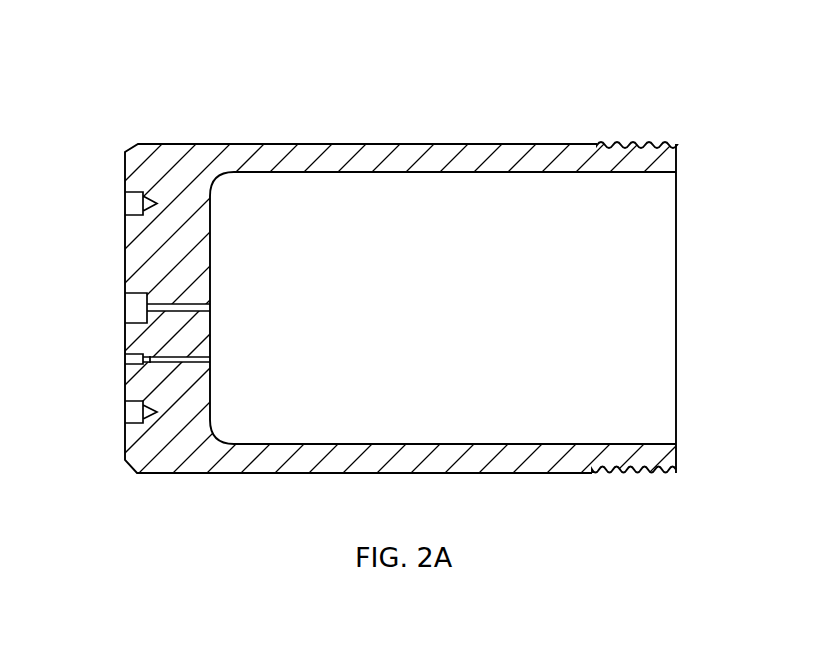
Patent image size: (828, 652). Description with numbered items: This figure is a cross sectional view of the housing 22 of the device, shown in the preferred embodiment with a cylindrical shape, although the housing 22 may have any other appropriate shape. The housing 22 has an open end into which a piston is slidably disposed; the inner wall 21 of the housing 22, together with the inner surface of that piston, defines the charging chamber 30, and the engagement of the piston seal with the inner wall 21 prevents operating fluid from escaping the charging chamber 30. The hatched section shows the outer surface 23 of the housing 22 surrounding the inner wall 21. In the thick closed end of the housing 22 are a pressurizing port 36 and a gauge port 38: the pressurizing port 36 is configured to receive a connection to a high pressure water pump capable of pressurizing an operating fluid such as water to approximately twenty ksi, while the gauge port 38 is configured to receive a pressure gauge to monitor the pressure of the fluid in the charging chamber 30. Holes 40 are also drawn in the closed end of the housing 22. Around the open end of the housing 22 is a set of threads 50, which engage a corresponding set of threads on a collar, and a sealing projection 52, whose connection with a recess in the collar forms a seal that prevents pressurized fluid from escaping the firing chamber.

The housing 22 is at (320, 68).
The outer surface 23 is at (398, 147).
The inner wall 21 is at (422, 164).
The charging chamber 30 is at (305, 279).
The pressurizing port 36 is at (125, 313).
The gauge port 38 is at (125, 362).
The blind holes 40 is at (125, 205).
The threads 50 is at (628, 143).
The sealing projection 52 is at (671, 159).